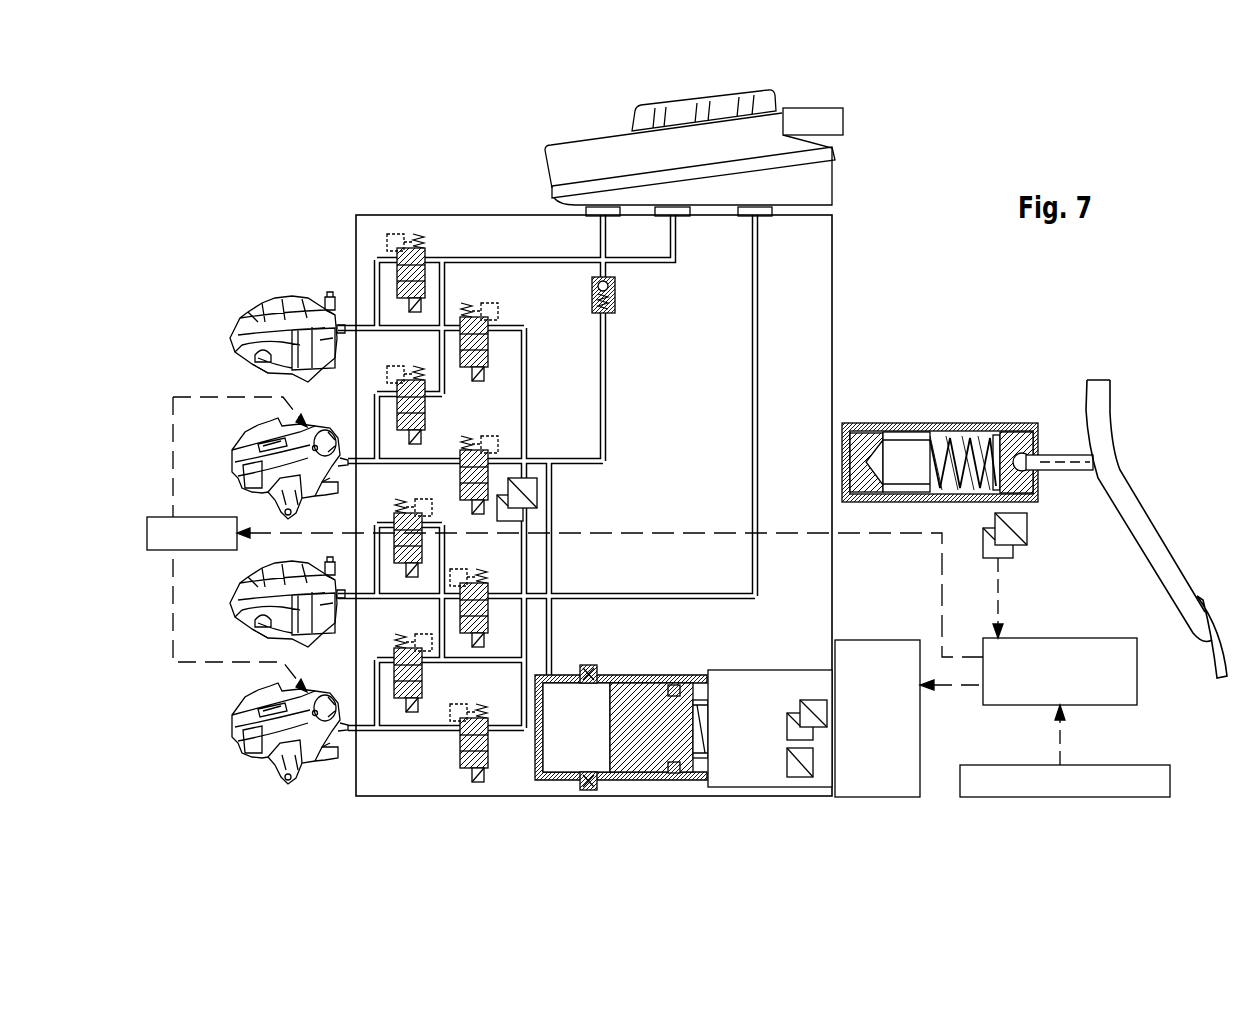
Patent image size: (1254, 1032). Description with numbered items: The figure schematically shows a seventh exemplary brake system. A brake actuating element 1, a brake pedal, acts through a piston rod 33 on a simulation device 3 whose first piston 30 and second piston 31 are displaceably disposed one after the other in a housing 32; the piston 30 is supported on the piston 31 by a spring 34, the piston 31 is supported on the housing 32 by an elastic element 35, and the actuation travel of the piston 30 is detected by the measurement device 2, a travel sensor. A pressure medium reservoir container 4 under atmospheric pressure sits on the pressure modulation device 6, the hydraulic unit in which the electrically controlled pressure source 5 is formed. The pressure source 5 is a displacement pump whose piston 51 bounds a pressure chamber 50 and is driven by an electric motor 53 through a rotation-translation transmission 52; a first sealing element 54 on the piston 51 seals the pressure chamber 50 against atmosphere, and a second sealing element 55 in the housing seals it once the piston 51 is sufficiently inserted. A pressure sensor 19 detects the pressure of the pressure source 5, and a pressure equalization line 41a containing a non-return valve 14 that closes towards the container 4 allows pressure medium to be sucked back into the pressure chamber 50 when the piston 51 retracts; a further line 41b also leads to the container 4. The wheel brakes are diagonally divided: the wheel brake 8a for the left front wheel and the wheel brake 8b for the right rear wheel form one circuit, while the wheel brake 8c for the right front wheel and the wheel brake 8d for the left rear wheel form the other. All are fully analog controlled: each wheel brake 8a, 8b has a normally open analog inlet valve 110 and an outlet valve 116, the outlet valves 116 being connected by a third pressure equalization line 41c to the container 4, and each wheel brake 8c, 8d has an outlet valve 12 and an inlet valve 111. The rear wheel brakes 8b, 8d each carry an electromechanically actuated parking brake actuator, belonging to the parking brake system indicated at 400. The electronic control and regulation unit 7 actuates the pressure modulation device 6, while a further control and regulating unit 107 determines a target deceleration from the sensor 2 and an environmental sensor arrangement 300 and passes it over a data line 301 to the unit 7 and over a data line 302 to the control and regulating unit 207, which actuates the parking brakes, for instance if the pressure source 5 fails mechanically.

The brake actuating element 1 is at (1145, 525).
The measurement device 2 is at (1030, 533).
The simulation device 3 is at (967, 414).
The pressure medium reservoir container 4 is at (596, 152).
The pressure source 5 is at (637, 761).
The pressure modulation device 6 is at (415, 214).
The electronic control and regulation unit 7 is at (877, 770).
The wheel brake 8a is at (236, 335).
The wheel brake 8b is at (236, 462).
The wheel brake 8c is at (236, 602).
The wheel brake 8d is at (236, 727).
The outlet valve 12 is at (462, 613).
The non-return valve 14 is at (620, 292).
The pressure sensor 19 is at (538, 496).
The first piston 30 is at (1040, 480).
The piston 31 is at (900, 444).
The housing 32 is at (926, 424).
The piston rod 33 is at (1061, 454).
The spring 34 is at (941, 437).
The elastic element 35 is at (873, 440).
The pressure equalization line 41a is at (607, 410).
The hydraulic line 41b is at (753, 358).
The third pressure equalization line 41c is at (566, 258).
The pressure chamber 50 is at (555, 762).
The piston 51 is at (636, 762).
The rotation-translation transmission 52 is at (712, 752).
The electric motor 53 is at (770, 770).
The first sealing element 54 is at (676, 771).
The second sealing element 55 is at (588, 789).
The control and regulating unit 107 is at (1105, 638).
The inlet valve 110 is at (480, 345).
The inlet valve 111 is at (423, 546).
The outlet valve 116 is at (400, 278).
The control and regulating unit 207 is at (193, 517).
The environmental sensor arrangement 300 is at (1168, 780).
The data line 301 is at (963, 692).
The data line 302 is at (942, 596).
The electromechanical parking brake 400 is at (175, 396).